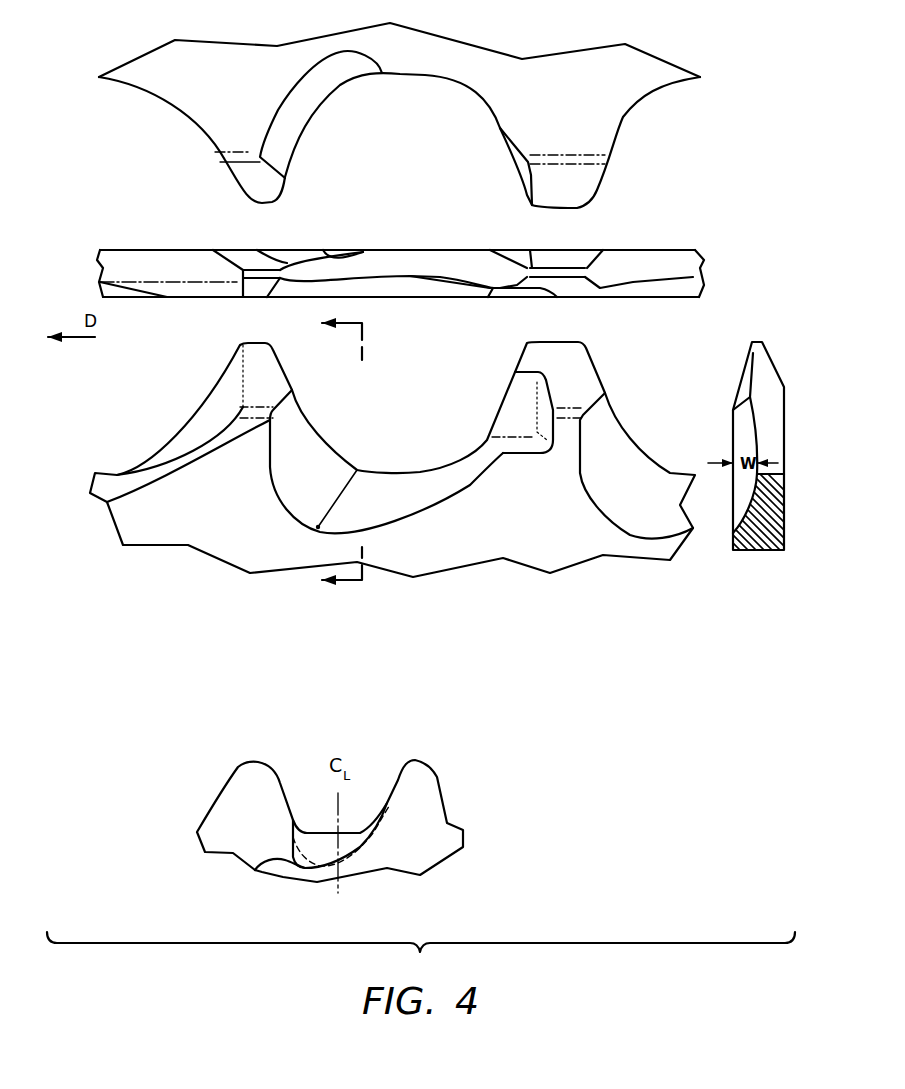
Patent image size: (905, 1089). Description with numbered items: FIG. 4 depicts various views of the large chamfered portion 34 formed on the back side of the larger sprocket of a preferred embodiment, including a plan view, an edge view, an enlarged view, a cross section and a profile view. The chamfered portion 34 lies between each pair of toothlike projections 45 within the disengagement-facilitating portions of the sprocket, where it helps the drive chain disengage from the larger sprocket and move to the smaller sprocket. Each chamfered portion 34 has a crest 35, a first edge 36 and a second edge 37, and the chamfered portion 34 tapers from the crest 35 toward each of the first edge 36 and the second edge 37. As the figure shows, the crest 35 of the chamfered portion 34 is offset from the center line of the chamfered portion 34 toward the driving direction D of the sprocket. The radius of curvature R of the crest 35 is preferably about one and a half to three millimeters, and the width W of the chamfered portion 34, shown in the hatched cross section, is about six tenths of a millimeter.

The chamfered portion 34 is at (257, 868).
The crest 35 is at (313, 531).
The first edge 36 is at (270, 420).
The second edge 37 is at (503, 453).
The toothlike projections 45 is at (248, 775).